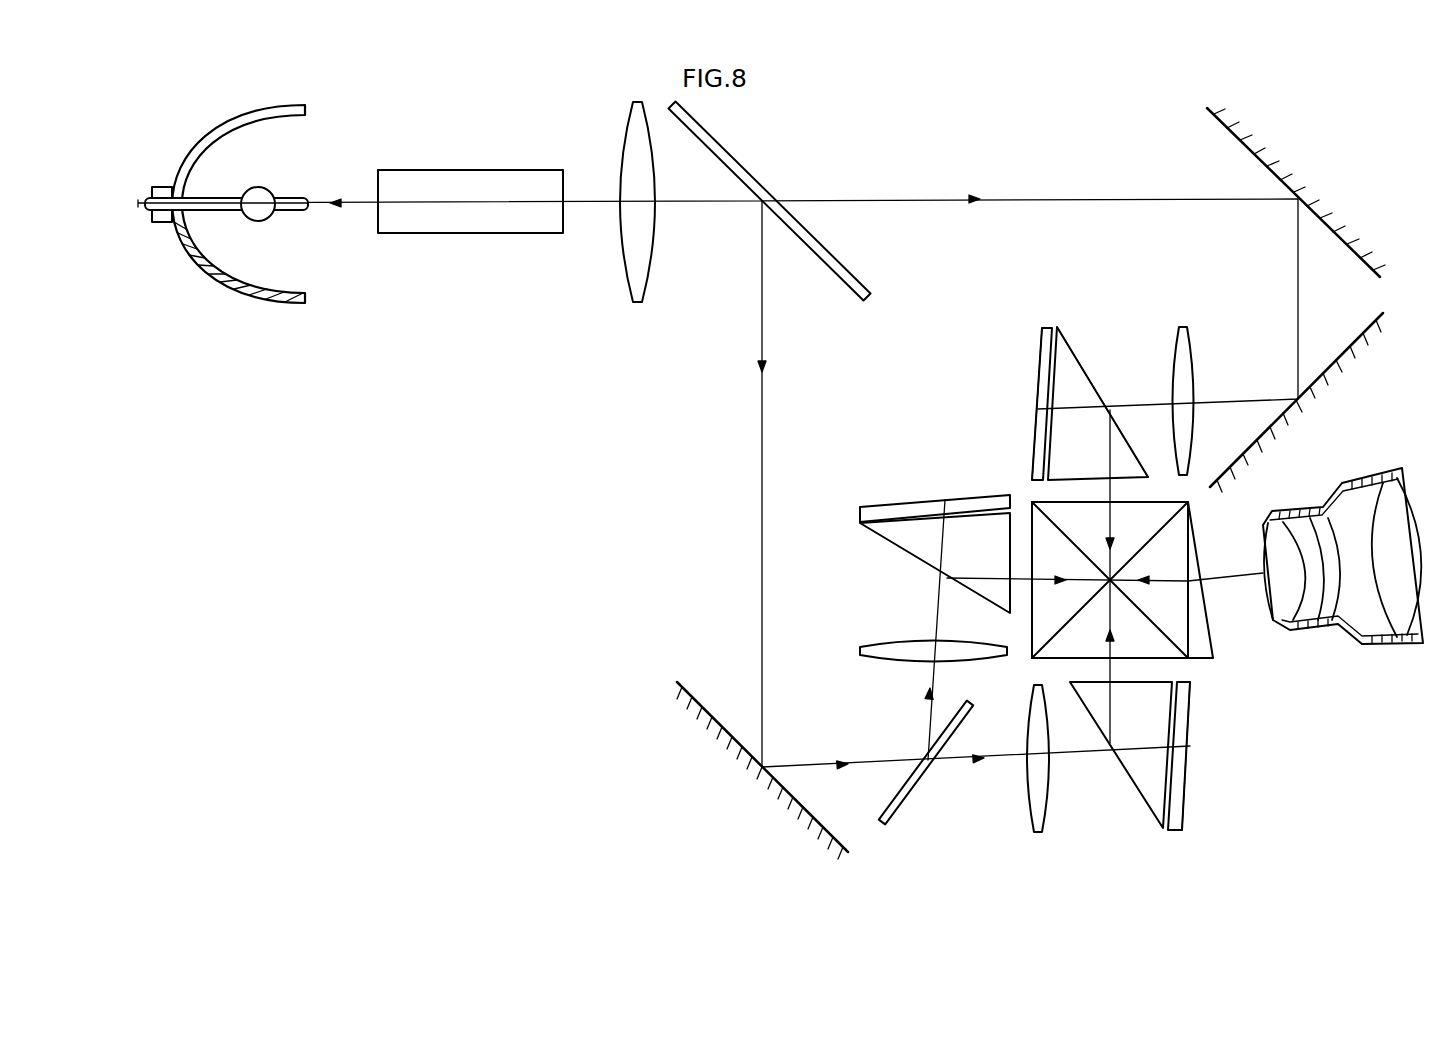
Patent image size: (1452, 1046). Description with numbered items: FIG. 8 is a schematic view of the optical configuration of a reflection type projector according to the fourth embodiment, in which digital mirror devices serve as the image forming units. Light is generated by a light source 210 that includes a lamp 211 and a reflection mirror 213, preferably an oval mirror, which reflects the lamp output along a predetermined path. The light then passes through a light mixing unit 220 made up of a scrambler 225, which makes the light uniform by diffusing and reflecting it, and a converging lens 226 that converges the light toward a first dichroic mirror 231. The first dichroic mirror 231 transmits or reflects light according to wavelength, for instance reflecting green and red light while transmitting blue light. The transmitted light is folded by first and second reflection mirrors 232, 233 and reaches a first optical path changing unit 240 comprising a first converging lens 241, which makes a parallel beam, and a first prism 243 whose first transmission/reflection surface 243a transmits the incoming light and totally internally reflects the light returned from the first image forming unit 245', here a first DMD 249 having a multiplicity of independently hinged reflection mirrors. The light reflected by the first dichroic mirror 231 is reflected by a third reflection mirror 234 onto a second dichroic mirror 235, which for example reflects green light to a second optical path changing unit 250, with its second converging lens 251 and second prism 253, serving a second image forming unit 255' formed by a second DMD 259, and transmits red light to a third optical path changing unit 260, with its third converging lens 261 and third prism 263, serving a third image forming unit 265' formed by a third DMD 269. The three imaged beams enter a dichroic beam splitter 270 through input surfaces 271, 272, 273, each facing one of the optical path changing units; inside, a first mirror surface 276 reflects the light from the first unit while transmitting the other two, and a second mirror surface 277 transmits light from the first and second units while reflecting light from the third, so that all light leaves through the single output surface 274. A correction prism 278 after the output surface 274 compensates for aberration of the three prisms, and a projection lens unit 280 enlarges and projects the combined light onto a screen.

The light source 210 is at (250, 201).
The lamp 211 is at (268, 188).
The reflection mirror 213 is at (277, 306).
The light mixing unit 220 is at (519, 214).
The scrambler 225 is at (467, 223).
The converging lens 226 is at (640, 303).
The first dichroic mirror 231 is at (732, 164).
The first reflection mirror 232 is at (1338, 240).
The second reflection mirror 233 is at (1296, 402).
The third reflection mirror 234 is at (840, 842).
The second dichroic mirror 235 is at (913, 793).
The first optical path changing unit 240 is at (1120, 370).
The first converging lens 241 is at (1183, 353).
The first prism 243 is at (1078, 368).
The first transmission/reflection surface 243a is at (1075, 348).
The first image forming unit 245' is at (994, 404).
The first digital mirror device 249 is at (1040, 328).
The second optical path changing unit 250 is at (781, 566).
The second converging lens 251 is at (860, 650).
The second prism 253 is at (857, 537).
The second image forming unit 255' is at (824, 496).
The second digital mirror device 259 is at (917, 508).
The third optical path changing unit 260 is at (1146, 794).
The third converging lens 261 is at (1040, 832).
The third prism 263 is at (1147, 817).
The third image forming unit 265' is at (1241, 756).
The third digital mirror device 269 is at (1182, 785).
The dichroic beam splitter 270 is at (1165, 569).
The first input surface 271 is at (1188, 500).
The second input surface 272 is at (1028, 658).
The third input surface 273 is at (1185, 660).
The output surface 274 is at (1190, 563).
The first mirror surface 276 is at (1158, 627).
The second mirror surface 277 is at (1152, 533).
The correction prism 278 is at (1217, 654).
The projection lens unit 280 is at (1375, 467).